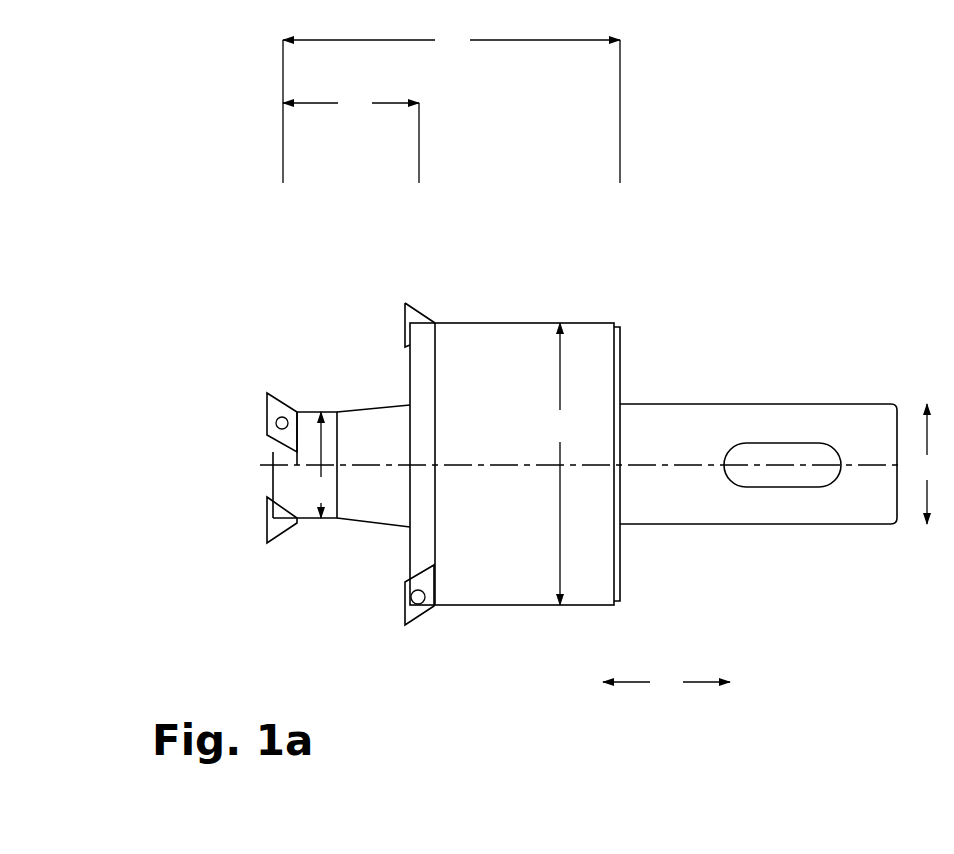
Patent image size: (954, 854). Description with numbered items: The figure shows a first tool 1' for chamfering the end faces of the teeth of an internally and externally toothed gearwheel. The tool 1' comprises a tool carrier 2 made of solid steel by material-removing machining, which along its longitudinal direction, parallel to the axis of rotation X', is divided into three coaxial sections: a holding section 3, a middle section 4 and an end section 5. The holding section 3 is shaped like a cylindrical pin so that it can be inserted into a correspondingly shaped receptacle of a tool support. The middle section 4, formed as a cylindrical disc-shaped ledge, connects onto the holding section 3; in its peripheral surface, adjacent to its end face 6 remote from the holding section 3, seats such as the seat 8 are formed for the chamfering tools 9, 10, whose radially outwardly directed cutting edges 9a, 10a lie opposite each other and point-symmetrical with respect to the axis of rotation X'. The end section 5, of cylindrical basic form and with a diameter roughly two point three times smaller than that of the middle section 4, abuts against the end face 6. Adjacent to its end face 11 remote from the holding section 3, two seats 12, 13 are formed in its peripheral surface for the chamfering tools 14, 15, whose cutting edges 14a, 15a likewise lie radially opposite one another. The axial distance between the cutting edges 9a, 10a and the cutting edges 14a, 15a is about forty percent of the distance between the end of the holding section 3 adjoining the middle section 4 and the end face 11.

The tool 1' is at (547, 366).
The tool carrier 2 is at (690, 403).
The holding section 3 is at (866, 432).
The middle section 4 is at (508, 320).
The end section 5 is at (370, 445).
The end face 6 is at (406, 377).
The seat 8 is at (440, 607).
The chamfering tool 9 is at (405, 320).
The cutting edge 9a is at (409, 305).
The chamfering tool 10 is at (404, 594).
The cutting edge 10a is at (418, 612).
The end face 11 is at (271, 480).
The seat 12 is at (277, 457).
The seat 13 is at (300, 522).
The chamfering tool 14 is at (267, 400).
The cutting edge 14a is at (275, 392).
The chamfering tool 15 is at (266, 535).
The cutting edge 15a is at (280, 537).
The axis of rotation X' is at (581, 385).